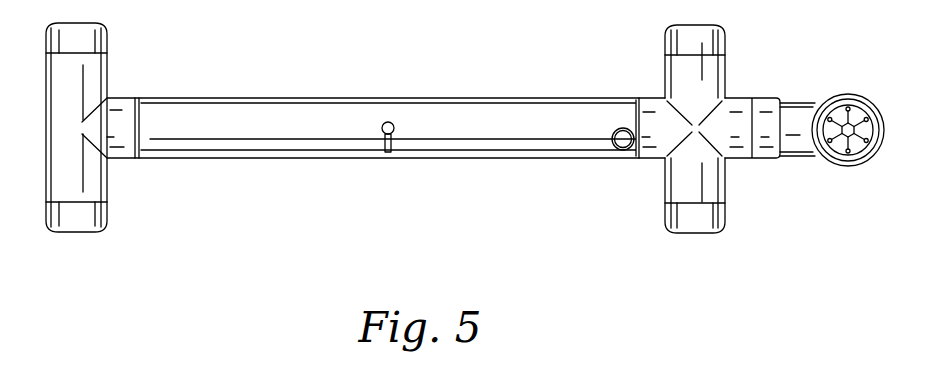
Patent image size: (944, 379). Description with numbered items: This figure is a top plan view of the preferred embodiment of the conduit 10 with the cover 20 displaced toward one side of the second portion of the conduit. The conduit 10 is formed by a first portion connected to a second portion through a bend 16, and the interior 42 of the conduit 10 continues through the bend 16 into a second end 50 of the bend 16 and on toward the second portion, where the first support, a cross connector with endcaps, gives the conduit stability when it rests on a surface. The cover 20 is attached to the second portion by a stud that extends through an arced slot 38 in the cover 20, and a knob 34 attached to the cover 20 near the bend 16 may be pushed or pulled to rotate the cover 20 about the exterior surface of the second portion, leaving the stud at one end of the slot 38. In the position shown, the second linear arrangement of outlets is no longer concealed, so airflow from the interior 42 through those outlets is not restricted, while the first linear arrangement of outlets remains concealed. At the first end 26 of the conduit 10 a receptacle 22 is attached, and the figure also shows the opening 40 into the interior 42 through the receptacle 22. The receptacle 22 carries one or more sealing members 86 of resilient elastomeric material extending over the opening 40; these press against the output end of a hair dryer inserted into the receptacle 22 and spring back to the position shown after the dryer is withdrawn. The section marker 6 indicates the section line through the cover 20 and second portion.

The conduit 10 is at (467, 149).
The cover 20 is at (493, 115).
The slot 38 is at (398, 135).
The knob 34 is at (625, 148).
The section line 6- 6 is at (387, 45).
The second end 50 is at (752, 164).
The bend 16 is at (797, 103).
The first end 26 is at (840, 143).
The receptacle 22 is at (832, 98).
The interior 42 is at (852, 146).
The opening 40 is at (853, 110).
The sealing members 86 is at (828, 142).